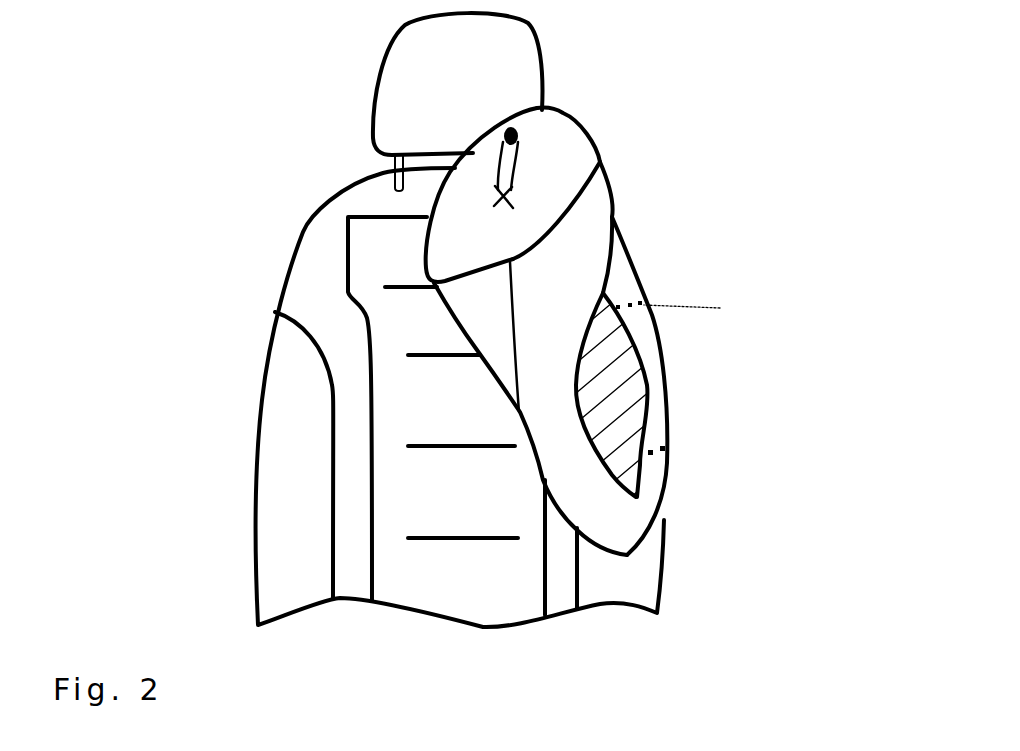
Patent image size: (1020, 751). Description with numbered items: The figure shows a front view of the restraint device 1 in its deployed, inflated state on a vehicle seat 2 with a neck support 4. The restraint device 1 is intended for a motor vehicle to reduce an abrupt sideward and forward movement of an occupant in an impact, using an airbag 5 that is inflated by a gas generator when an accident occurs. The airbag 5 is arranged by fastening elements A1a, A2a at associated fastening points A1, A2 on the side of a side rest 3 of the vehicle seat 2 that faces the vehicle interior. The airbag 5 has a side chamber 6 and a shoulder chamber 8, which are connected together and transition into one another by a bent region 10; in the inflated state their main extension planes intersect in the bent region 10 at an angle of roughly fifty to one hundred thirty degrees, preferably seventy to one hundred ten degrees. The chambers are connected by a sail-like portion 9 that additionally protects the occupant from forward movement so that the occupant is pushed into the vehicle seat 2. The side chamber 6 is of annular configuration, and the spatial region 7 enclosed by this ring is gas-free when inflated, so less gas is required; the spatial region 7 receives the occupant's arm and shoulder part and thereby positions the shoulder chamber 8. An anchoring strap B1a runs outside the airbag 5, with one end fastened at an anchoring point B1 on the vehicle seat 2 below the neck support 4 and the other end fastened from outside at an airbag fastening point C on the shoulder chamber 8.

The restraint device 1 is at (698, 48).
The vehicle seat 2 is at (457, 413).
The side rest 3 is at (287, 473).
The neck support 4 is at (475, 101).
The airbag 5 is at (805, 110).
The side chamber 6 is at (658, 412).
The spatial region 7 is at (607, 373).
The shoulder chamber 8 is at (548, 197).
The sail-like portion 9 is at (482, 292).
The bent region 10 is at (551, 232).
The fastening point A1 is at (651, 453).
The fastening element A1a is at (667, 450).
The fastening point A2 is at (720, 308).
The fastening element A2a is at (643, 302).
The anchoring point B1 is at (515, 188).
The anchoring strap B1a is at (520, 148).
The airbag fastening point C is at (520, 128).